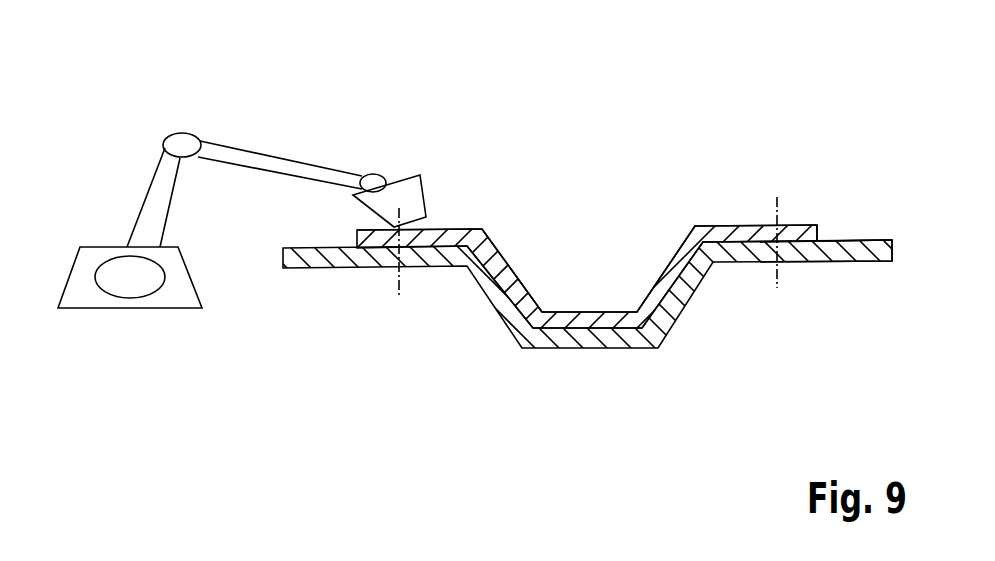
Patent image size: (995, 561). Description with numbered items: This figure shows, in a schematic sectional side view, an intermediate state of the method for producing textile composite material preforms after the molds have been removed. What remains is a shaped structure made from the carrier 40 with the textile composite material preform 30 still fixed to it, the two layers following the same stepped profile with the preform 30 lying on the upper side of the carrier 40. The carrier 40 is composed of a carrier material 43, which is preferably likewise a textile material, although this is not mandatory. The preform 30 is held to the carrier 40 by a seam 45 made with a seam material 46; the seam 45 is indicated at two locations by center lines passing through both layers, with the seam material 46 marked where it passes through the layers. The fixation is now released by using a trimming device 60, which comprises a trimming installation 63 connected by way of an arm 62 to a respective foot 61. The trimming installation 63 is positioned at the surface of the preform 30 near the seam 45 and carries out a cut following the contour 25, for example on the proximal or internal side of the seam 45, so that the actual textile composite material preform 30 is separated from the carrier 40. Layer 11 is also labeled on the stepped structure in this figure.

The fiber composite layer 11 is at (521, 258).
The contour 25 is at (820, 232).
The textile composite material preform 30 is at (483, 227).
The carrier 40 is at (846, 265).
The carrier material 43 is at (802, 262).
The seam 45 is at (407, 283).
The seam material 46 is at (398, 272).
The trimming device 60 is at (242, 211).
The foot 61 is at (122, 300).
The arm 62 is at (148, 213).
The trimming installation 63 is at (401, 188).